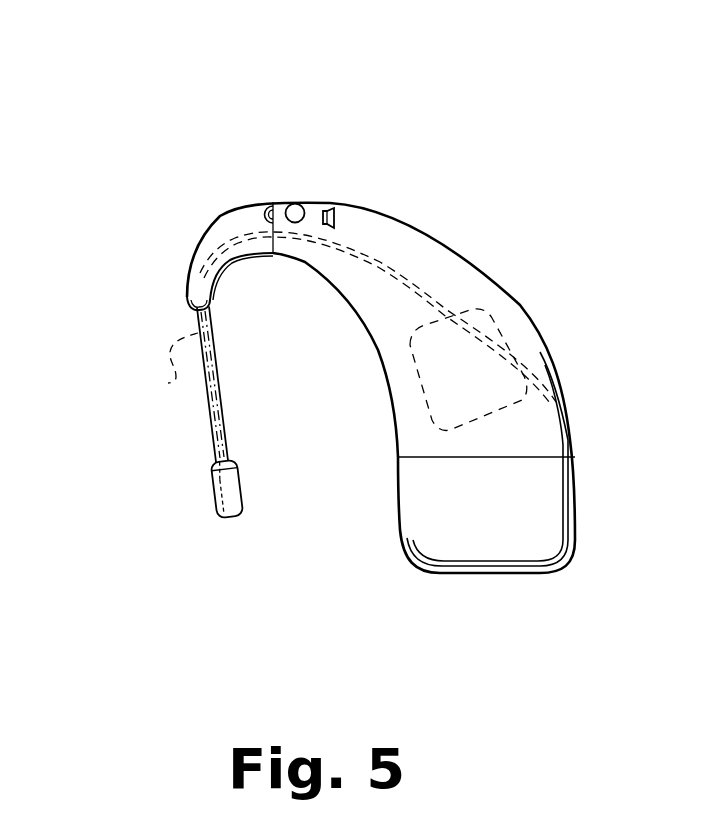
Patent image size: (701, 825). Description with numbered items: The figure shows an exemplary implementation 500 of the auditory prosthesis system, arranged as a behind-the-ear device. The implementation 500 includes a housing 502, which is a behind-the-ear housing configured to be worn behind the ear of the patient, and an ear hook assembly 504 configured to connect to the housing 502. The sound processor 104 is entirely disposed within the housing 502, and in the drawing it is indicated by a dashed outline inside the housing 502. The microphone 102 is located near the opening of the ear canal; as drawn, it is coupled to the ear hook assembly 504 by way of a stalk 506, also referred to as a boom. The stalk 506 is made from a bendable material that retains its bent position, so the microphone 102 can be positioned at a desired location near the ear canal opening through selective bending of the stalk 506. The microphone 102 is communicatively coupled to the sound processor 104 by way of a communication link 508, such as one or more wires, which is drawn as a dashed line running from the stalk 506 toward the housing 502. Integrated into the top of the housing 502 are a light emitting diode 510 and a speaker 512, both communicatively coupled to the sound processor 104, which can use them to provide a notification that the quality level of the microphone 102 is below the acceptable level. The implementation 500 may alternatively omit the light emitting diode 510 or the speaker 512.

The implementation 500 is at (116, 82).
The housing 502 is at (450, 260).
The ear hook assembly 504 is at (240, 217).
The light emitting diode 510 is at (295, 203).
The speaker 512 is at (333, 208).
The sound processor 104 is at (492, 353).
The communication link 508 is at (170, 382).
The stalk 506 is at (207, 390).
The microphone 102 is at (240, 515).